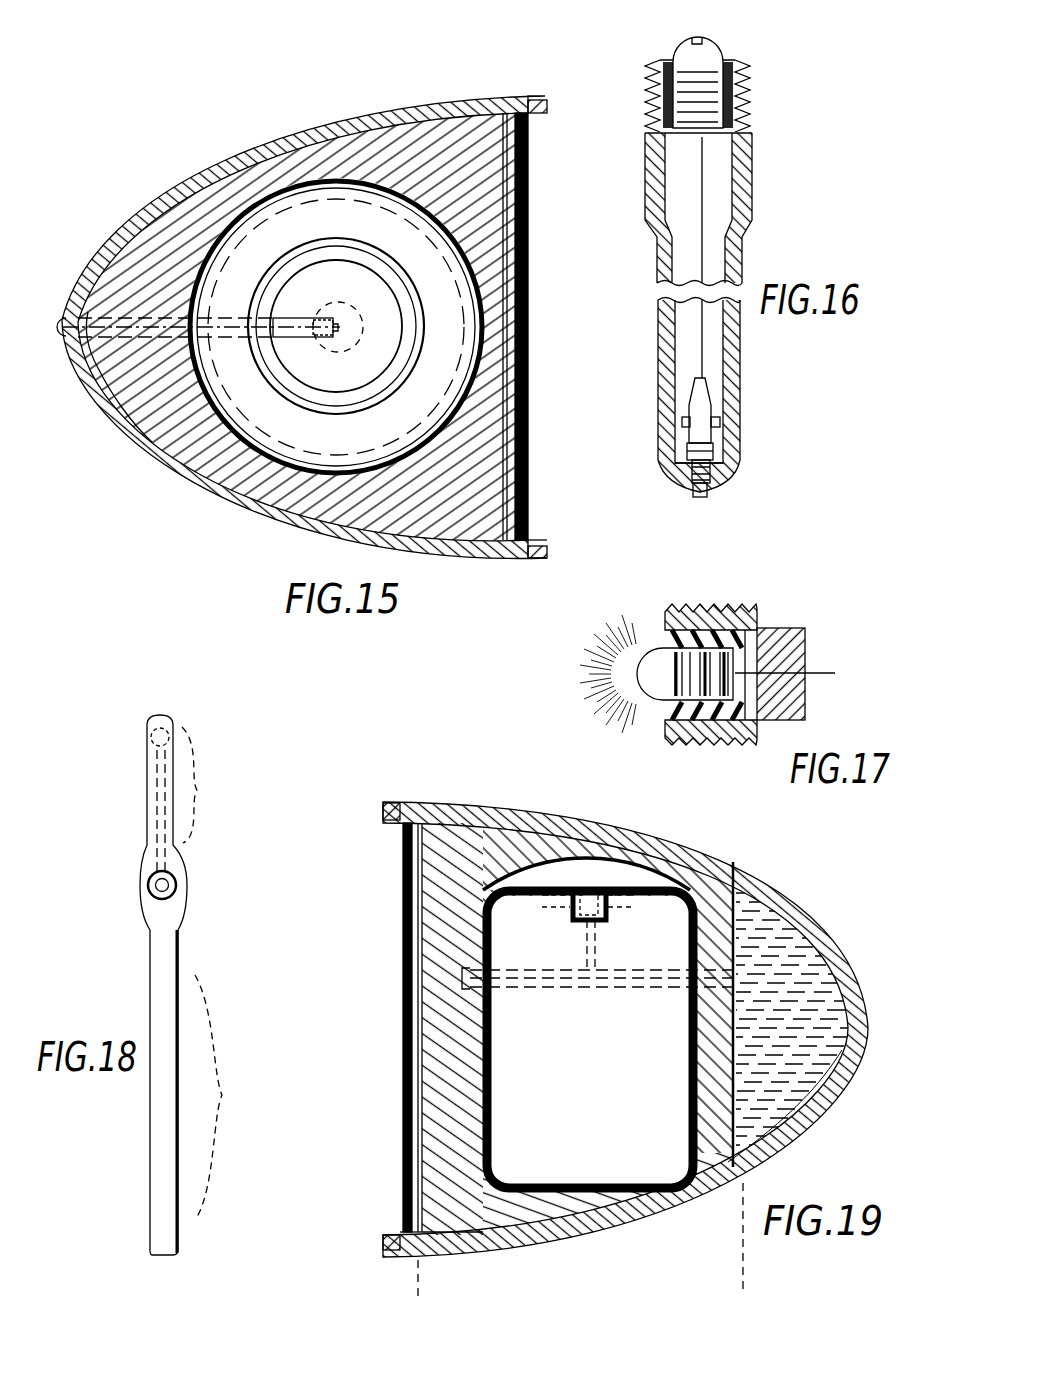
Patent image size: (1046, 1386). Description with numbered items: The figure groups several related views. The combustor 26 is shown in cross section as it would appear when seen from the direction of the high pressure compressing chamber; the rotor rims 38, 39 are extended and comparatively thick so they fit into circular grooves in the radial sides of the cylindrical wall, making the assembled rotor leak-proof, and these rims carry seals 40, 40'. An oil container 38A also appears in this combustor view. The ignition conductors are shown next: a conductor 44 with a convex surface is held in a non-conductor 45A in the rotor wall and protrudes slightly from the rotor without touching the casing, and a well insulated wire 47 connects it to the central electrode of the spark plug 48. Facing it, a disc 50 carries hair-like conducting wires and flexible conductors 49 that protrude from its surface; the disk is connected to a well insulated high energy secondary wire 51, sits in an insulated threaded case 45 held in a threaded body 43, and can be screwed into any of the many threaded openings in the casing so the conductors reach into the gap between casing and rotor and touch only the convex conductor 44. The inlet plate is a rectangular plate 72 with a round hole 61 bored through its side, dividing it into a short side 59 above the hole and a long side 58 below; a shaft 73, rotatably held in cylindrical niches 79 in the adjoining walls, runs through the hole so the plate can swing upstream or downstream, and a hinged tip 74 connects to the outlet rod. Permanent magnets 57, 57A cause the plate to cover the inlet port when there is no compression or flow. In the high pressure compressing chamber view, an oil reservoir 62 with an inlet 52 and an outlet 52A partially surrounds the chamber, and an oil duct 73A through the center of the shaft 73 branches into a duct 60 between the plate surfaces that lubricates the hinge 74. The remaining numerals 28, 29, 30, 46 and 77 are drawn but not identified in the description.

In FIG. 15, the combustor 26 is at (323, 325).
In FIG. 15, the annular rim of reflector 28 is at (245, 212).
In FIG. 15, the inner reflector ring 29 is at (403, 286).
In FIG. 15, the bulb socket hub 30 is at (332, 296).
In FIG. 15, the rotor rim 38 is at (528, 118).
In FIG. 19, the rotor rim 38 is at (395, 826).
In FIG. 15, the oil container 38A is at (526, 300).
In FIG. 19, the oil container 38A is at (407, 1030).
In FIG. 15, the rotor rim 39 is at (538, 538).
In FIG. 15, the seal 40 is at (561, 129).
In FIG. 19, the seal 40 is at (355, 816).
In FIG. 15, the lower fastening clip 40' is at (567, 517).
In FIG. 19, the lower fastening clip 40' is at (356, 1242).
In FIG. 17, the threaded body 43 is at (697, 610).
In FIG. 15, the conductor 44 is at (60, 334).
In FIG. 16, the conductor 44 is at (724, 40).
In FIG. 17, the insulated threaded case 45 is at (672, 702).
In FIG. 16, the non-conductor 45A is at (727, 68).
In FIG. 15, the housing casing 46 is at (104, 400).
In FIG. 16, the housing casing 46 is at (752, 170).
In FIG. 16, the insulated wire 47 is at (705, 225).
In FIG. 16, the spark plug 48 is at (710, 403).
In FIG. 17, the hair-like conducting wires and flexible conductors 49 is at (605, 655).
In FIG. 17, the disc 50 is at (657, 677).
In FIG. 17, the high energy secondary wire 51 is at (835, 673).
In FIG. 19, the inlet 52 is at (847, 963).
In FIG. 19, the outlet 52A is at (830, 1100).
In FIG. 18, the permanent magnet 57 is at (163, 1243).
In FIG. 19, the permanent magnet 57 is at (519, 1159).
In FIG. 19, the permanent magnet 57A is at (652, 1156).
In FIG. 18, the long side 58 is at (230, 1096).
In FIG. 18, the short side 59 is at (213, 785).
In FIG. 19, the short side 59 is at (405, 1233).
In FIG. 18, the oil duct 60 is at (157, 773).
In FIG. 19, the oil duct 60 is at (597, 945).
In FIG. 18, the round hole 61 is at (147, 868).
In FIG. 19, the oil reservoir 62 is at (772, 940).
In FIG. 18, the rectangular plate 72 is at (150, 1107).
In FIG. 19, the rectangular plate 72 is at (590, 1039).
In FIG. 18, the shaft 73 is at (148, 883).
In FIG. 19, the shaft 73 is at (547, 987).
In FIG. 18, the oil duct 73A is at (160, 890).
In FIG. 19, the oil duct 73A is at (633, 983).
In FIG. 18, the hinged tip 74 is at (153, 738).
In FIG. 19, the hinged tip 74 is at (567, 870).
In FIG. 19, the filler body 77 is at (535, 848).
In FIG. 19, the cylindrical niche 79 is at (462, 975).